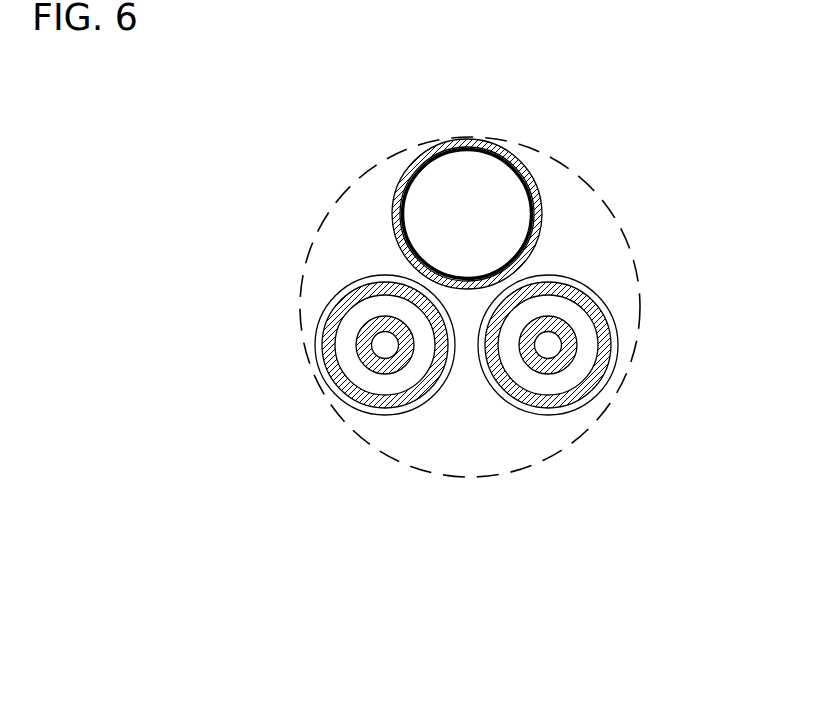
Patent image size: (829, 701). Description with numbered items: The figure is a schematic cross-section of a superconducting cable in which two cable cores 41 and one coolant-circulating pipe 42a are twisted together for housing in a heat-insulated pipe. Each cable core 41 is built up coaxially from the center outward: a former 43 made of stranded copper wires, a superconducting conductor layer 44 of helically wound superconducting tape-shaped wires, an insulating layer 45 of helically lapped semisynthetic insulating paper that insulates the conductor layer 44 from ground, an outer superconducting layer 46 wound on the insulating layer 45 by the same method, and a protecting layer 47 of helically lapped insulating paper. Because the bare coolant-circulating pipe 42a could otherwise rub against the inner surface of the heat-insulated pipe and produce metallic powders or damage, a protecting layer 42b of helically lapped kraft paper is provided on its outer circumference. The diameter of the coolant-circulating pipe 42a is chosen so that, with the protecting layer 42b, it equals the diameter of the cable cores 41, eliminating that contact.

The cable core 41 is at (452, 353).
The coolant-circulating pipe 42a is at (480, 181).
The protecting layer 42b is at (433, 190).
The former 43 is at (367, 325).
The superconducting conductor layer 44 is at (382, 342).
The insulating layer 45 is at (365, 356).
The outer superconducting layer 46 is at (385, 404).
The protecting layer 47 is at (370, 315).